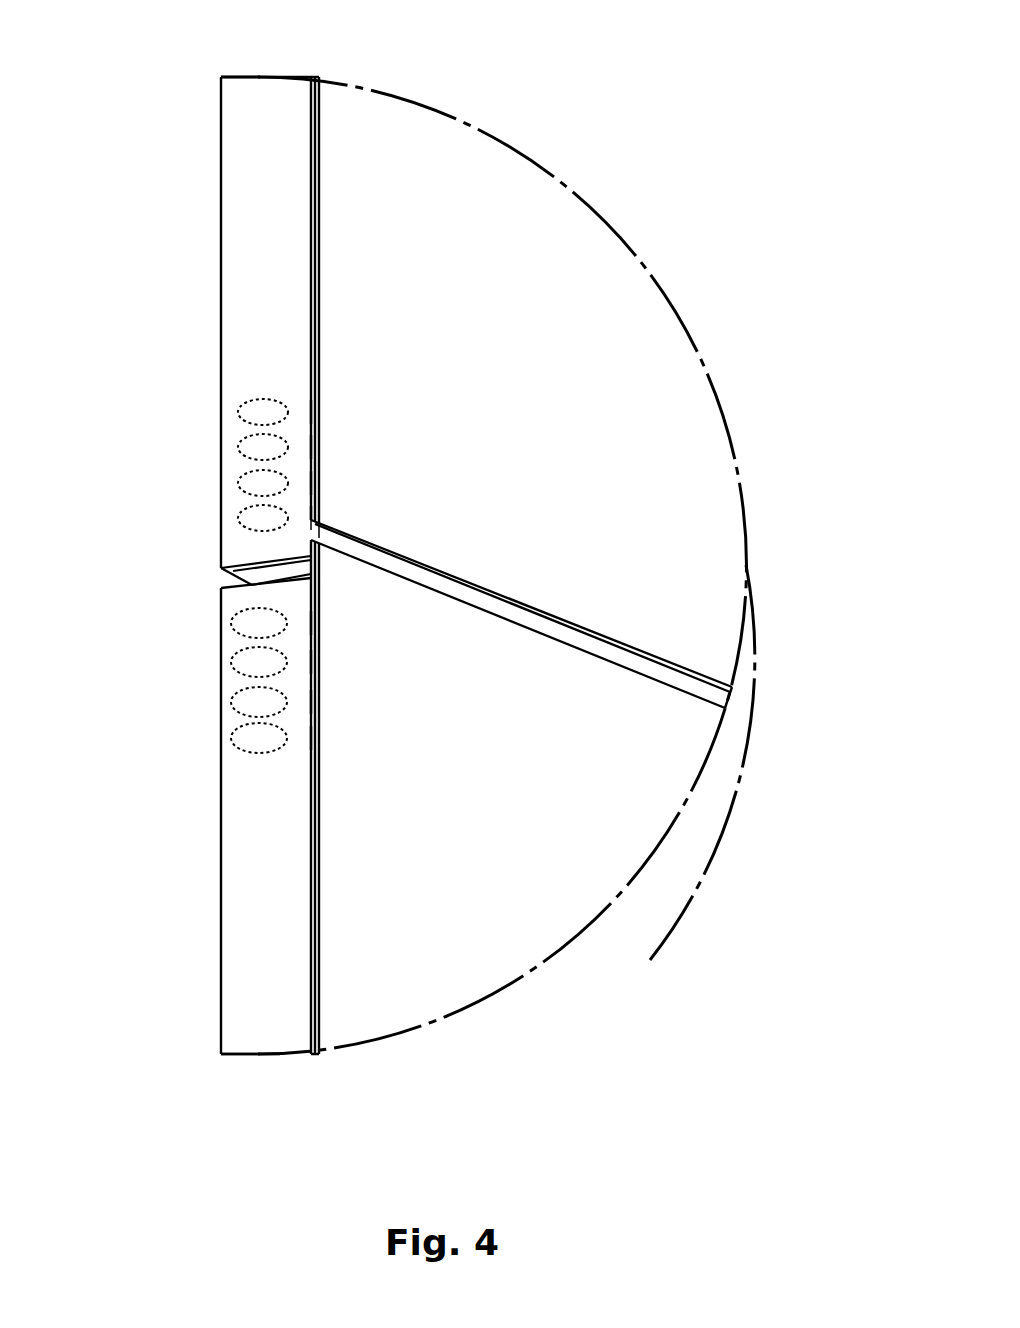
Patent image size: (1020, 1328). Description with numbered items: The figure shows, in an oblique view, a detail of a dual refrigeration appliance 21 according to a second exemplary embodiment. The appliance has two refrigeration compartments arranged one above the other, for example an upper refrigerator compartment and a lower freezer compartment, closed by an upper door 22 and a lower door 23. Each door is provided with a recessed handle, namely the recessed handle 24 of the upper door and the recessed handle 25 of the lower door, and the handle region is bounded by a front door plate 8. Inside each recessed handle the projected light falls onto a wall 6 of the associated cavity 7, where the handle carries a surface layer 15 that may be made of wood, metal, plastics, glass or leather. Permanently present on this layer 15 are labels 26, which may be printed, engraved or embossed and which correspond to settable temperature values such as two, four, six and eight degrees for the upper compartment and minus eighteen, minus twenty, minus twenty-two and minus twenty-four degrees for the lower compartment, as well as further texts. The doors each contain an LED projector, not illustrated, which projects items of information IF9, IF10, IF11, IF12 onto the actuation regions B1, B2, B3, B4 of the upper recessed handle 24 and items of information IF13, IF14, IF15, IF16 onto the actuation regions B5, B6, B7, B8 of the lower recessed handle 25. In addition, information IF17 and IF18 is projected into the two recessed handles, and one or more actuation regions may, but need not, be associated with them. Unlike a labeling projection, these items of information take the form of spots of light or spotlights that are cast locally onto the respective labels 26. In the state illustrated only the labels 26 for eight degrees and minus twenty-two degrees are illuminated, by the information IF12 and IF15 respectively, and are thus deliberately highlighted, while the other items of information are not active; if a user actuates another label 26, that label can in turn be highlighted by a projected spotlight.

The dual refrigeration appliance 21 is at (152, 122).
The wall 6 is at (250, 236).
The cavity 7 is at (250, 944).
The surface layer 15 is at (285, 120).
The recessed handle 24 is at (250, 66).
The recessed handle 25 is at (250, 1064).
The upper door 22 is at (575, 220).
The lower door 23 is at (655, 805).
The door plate 8 is at (708, 436).
The labels 26 is at (240, 528).
The information IF17 is at (208, 345).
The information IF18 is at (230, 807).
The information IF12 is at (238, 412).
The information IF11 is at (238, 447).
The information IF10 is at (238, 483).
The information IF9 is at (238, 519).
The information IF16 is at (232, 624).
The information IF15 is at (232, 663).
The information IF14 is at (232, 702).
The information IF13 is at (232, 739).
The actuation region B4 is at (288, 412).
The actuation region B3 is at (288, 447).
The actuation region B2 is at (288, 483).
The actuation region B1 is at (288, 518).
The actuation region B8 is at (287, 623).
The actuation region B7 is at (287, 662).
The actuation region B6 is at (287, 702).
The actuation region B5 is at (287, 738).